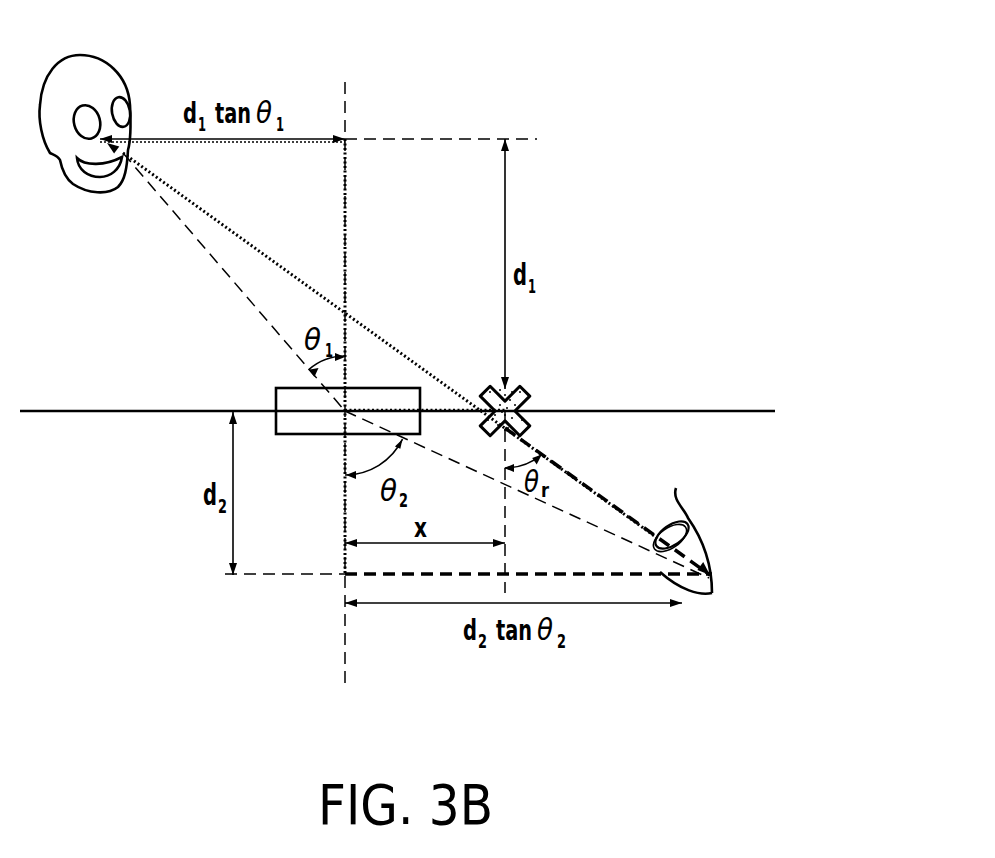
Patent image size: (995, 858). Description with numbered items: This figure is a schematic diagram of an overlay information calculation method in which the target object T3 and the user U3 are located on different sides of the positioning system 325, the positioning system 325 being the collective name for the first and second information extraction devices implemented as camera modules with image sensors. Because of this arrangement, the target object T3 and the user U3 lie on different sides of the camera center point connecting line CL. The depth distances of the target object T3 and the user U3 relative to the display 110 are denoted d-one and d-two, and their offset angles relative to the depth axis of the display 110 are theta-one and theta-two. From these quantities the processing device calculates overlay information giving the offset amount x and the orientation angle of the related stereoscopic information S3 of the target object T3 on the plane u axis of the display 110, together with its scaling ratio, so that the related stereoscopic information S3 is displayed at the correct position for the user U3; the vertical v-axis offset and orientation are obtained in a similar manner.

The target object T3 is at (93, 63).
The camera center point connecting line CL is at (345, 85).
The positioning system 325 is at (288, 397).
The related stereoscopic information S3 is at (509, 386).
The display 110 is at (735, 410).
The user U3 is at (710, 543).